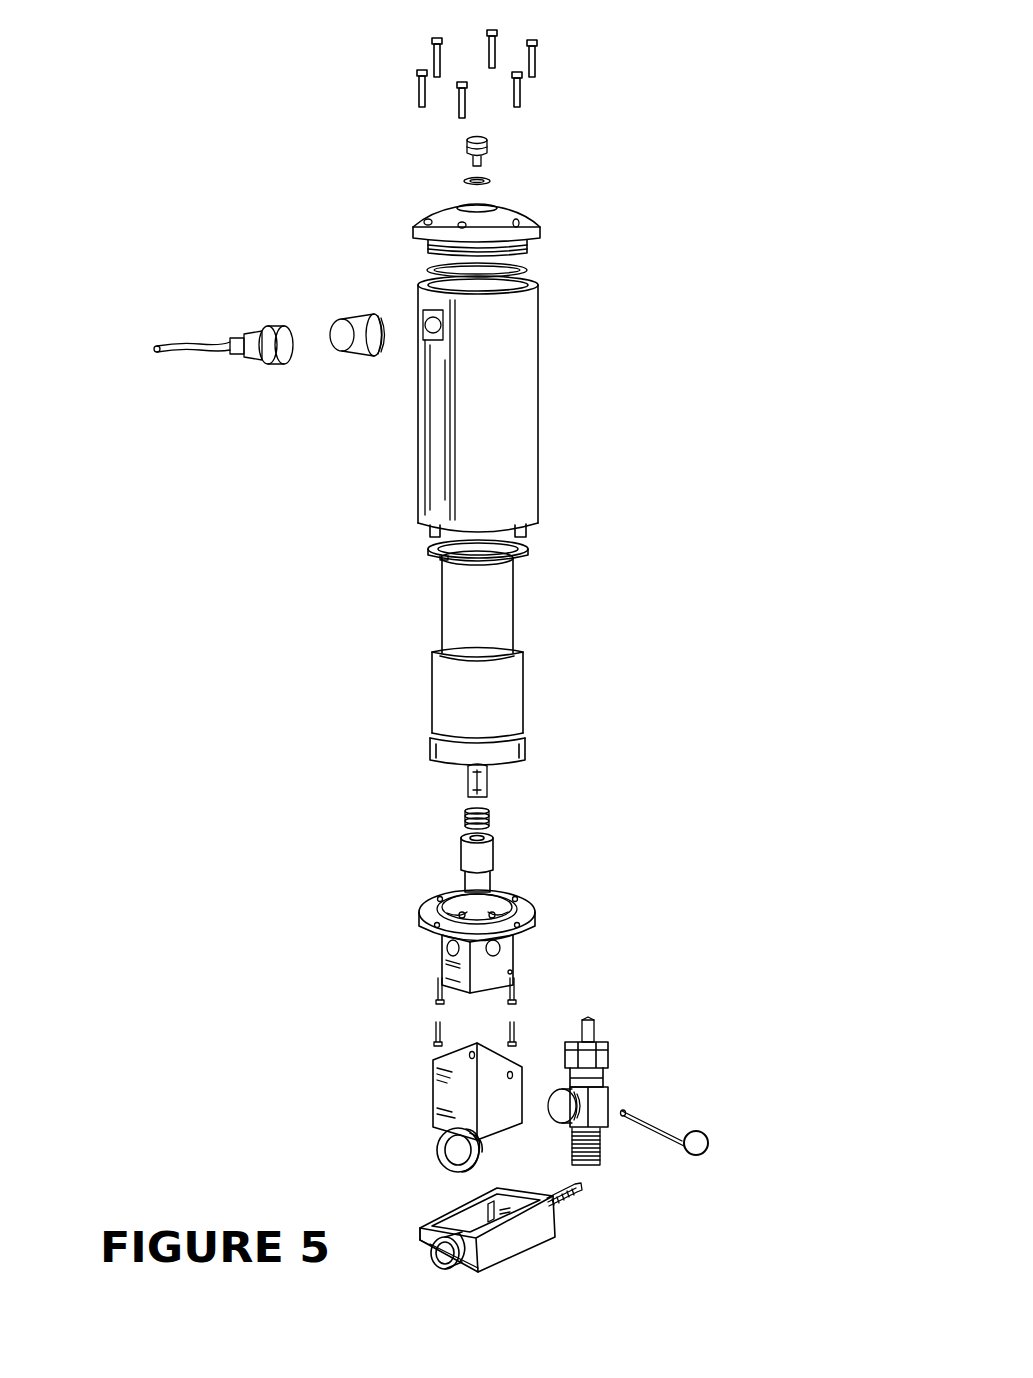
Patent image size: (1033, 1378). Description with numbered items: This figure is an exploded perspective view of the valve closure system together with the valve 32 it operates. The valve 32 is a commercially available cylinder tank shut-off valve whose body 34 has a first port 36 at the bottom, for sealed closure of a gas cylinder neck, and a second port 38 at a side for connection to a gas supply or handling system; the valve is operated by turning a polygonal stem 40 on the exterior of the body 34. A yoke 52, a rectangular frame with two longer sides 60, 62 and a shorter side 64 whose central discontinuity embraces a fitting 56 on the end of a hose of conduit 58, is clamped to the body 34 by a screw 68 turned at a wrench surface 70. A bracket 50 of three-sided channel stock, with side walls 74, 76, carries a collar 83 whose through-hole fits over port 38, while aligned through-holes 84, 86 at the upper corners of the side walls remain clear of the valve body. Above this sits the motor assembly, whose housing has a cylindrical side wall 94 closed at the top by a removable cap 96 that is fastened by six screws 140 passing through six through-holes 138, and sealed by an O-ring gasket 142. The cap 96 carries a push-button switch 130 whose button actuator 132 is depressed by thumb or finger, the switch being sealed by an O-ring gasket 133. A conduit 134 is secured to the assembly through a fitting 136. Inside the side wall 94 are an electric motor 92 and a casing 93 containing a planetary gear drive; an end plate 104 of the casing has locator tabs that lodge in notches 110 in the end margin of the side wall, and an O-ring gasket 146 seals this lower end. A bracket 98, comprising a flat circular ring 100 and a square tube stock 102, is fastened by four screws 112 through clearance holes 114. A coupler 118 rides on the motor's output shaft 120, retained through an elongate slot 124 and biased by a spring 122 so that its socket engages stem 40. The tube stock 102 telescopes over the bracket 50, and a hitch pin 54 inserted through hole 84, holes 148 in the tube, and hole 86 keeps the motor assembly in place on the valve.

The screws 140 is at (459, 100).
The button actuator 132 is at (485, 138).
The push-button switch 130 is at (488, 154).
The O-ring gasket 133 is at (490, 181).
The through-holes 138 is at (460, 223).
The cap 96 is at (540, 232).
The O-ring gasket 142 is at (430, 268).
The fitting 136 is at (352, 318).
The conduit 134 is at (212, 350).
The cylindrical side wall 94 is at (525, 398).
The notches 110 is at (432, 548).
The O-ring gasket 146 is at (437, 556).
The electric motor 92 is at (515, 592).
The casing 93 is at (510, 684).
The end plate 104 is at (500, 762).
The elongate slot 124 is at (468, 784).
The output shaft 120 is at (487, 794).
The spring 122 is at (490, 818).
The coupler 118 is at (495, 860).
The clearance holes 114 is at (437, 925).
The bracket 98 is at (535, 907).
The flat circular ring 100 is at (525, 915).
The holes 148 is at (512, 972).
The square tube stock 102 is at (445, 960).
The screws 112 is at (436, 1044).
The through-hole 86 is at (475, 1052).
The through-hole 84 is at (512, 1072).
The side wall 74 is at (433, 1060).
The side wall 76 is at (440, 1100).
The bracket 50 is at (438, 1160).
The collar 83 is at (478, 1160).
The first port 36 is at (575, 1163).
The second port 38 is at (552, 1108).
The stem 40 is at (594, 1028).
The valve 32 is at (606, 1049).
The body 34 is at (590, 1105).
The hitch pin 54 is at (658, 1125).
The fitting 56 is at (470, 1230).
The longer side 60 is at (430, 1232).
The shorter side 64 is at (424, 1240).
The hose of conduit 58 is at (440, 1266).
The longer side 62 is at (508, 1247).
The yoke 52 is at (553, 1228).
The wrench surface 70 is at (582, 1186).
The screw 68 is at (562, 1200).